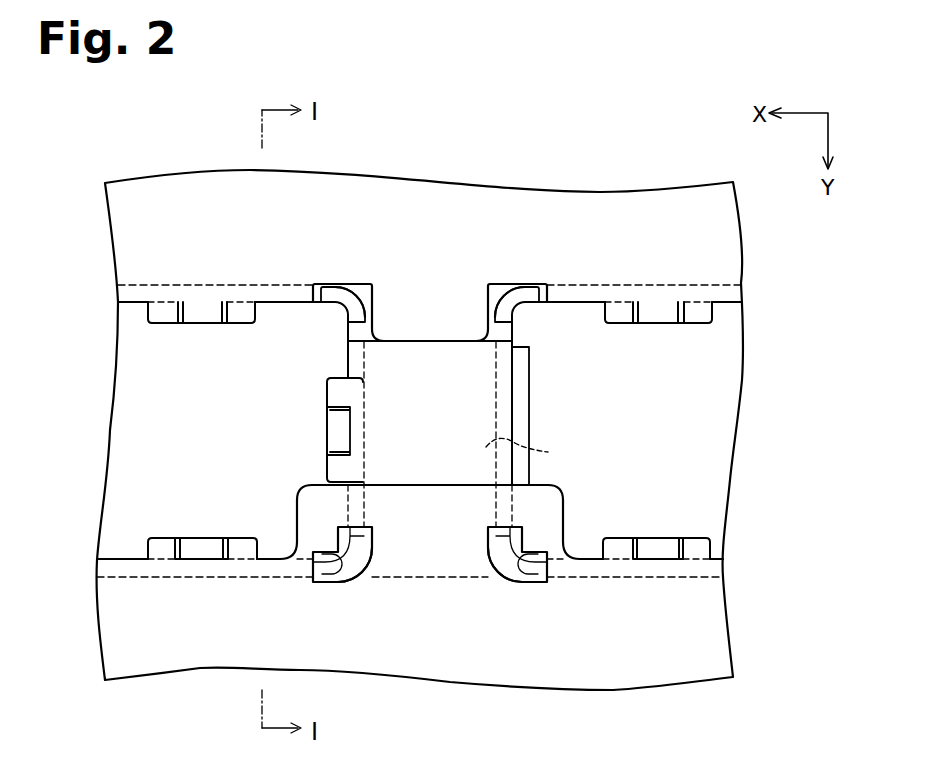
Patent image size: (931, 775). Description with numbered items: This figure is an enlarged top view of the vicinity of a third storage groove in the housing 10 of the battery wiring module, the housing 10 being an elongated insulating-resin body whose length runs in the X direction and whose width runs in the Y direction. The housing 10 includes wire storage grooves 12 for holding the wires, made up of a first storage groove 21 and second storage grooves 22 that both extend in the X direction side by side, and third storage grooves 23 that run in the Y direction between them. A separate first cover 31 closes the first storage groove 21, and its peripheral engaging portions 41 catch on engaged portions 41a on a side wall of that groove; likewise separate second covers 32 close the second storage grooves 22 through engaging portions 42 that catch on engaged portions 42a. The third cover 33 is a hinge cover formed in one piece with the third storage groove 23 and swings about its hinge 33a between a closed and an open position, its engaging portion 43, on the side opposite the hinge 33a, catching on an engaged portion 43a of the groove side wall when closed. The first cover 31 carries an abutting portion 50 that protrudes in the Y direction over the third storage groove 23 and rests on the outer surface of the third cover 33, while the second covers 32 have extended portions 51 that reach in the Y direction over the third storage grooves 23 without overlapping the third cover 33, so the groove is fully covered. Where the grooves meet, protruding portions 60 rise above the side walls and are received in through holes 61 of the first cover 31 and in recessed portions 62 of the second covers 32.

The housing 10 is at (92, 185).
The wire storage grooves 12 is at (513, 328).
The first storage groove 21 is at (682, 578).
The second storage grooves 22 is at (726, 287).
The third storage grooves 23 is at (534, 453).
The first cover 31 is at (435, 613).
The second covers 32 is at (435, 228).
The third cover 33 is at (420, 422).
The hinge 33a is at (529, 413).
The engaging portions 41 is at (165, 548).
The engaged portions 41a is at (202, 548).
The engaging portions 42 is at (163, 315).
The engaged portions 42a is at (202, 315).
The engaging portion 43 is at (335, 468).
The engaged portion 43a is at (337, 430).
The abutting portion 50 is at (432, 477).
The extended portions 51 is at (419, 340).
The protruding portions 60 is at (337, 292).
The through holes 61 is at (347, 565).
The recessed portions 62 is at (368, 283).